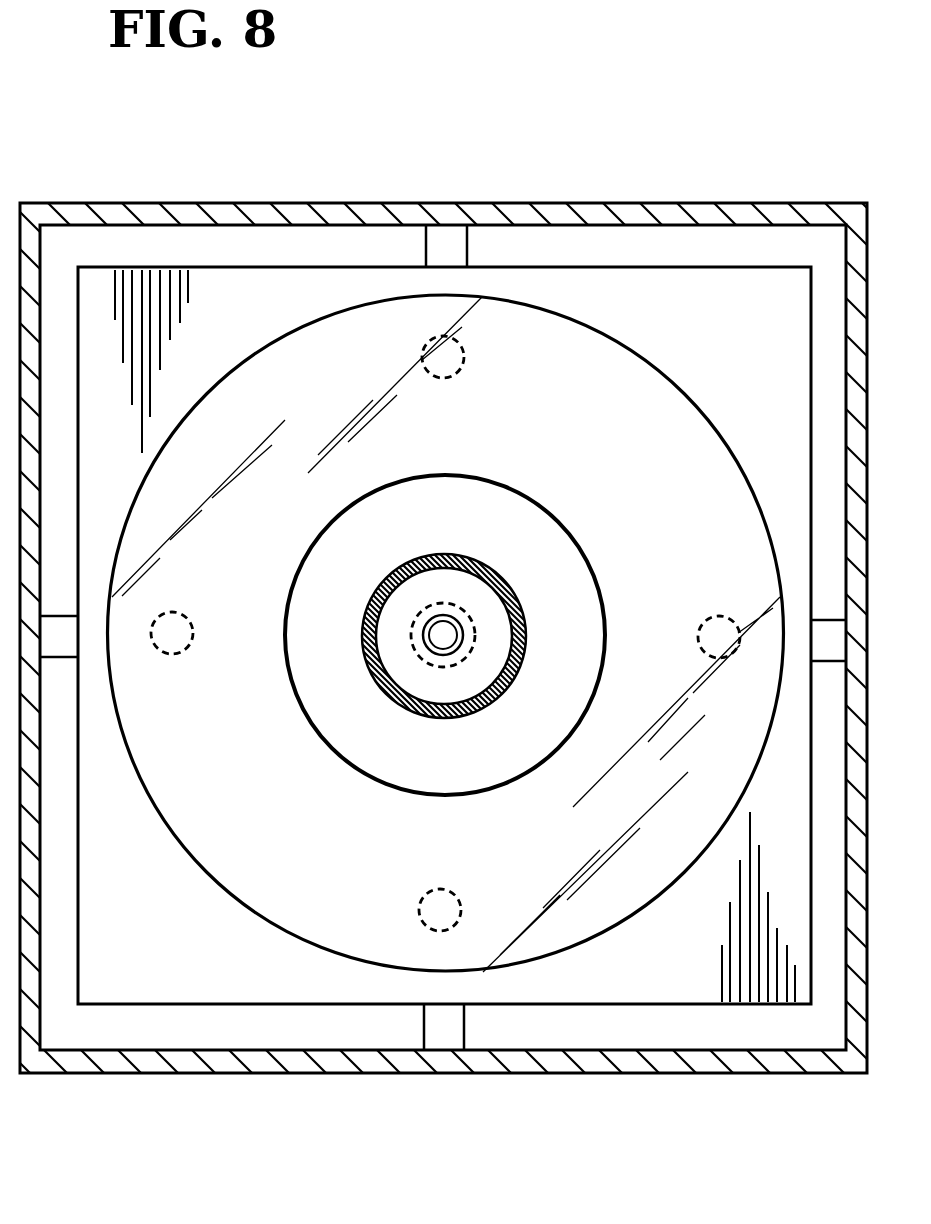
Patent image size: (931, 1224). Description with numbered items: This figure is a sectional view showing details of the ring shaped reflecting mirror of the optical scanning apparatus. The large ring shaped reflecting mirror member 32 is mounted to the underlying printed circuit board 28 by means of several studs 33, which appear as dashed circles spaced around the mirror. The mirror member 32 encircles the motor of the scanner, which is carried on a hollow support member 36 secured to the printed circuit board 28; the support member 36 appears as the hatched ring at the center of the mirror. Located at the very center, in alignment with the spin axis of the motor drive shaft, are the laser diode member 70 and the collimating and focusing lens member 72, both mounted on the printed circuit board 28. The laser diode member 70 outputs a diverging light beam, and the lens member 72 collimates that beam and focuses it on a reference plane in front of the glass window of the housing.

The printed circuit board 28 is at (210, 288).
The ring shaped reflecting mirror member 32 is at (650, 380).
The studs 33 is at (463, 352).
The hollow support member 36 is at (452, 554).
The laser diode member 70 is at (467, 652).
The collimating and focusing lens member 72 is at (460, 613).